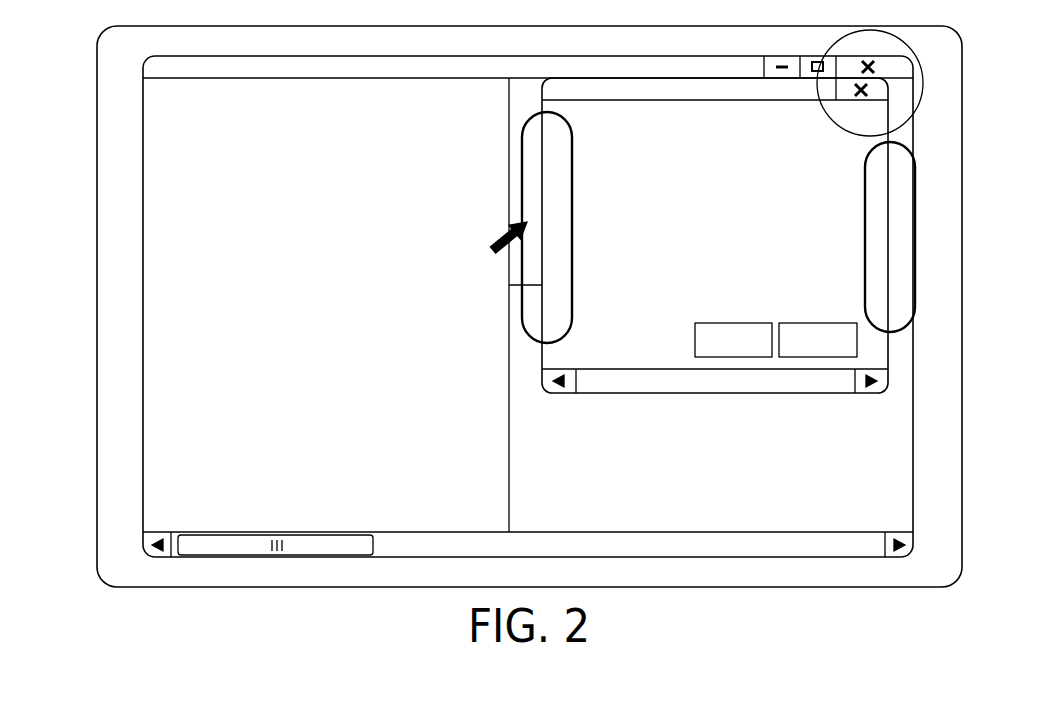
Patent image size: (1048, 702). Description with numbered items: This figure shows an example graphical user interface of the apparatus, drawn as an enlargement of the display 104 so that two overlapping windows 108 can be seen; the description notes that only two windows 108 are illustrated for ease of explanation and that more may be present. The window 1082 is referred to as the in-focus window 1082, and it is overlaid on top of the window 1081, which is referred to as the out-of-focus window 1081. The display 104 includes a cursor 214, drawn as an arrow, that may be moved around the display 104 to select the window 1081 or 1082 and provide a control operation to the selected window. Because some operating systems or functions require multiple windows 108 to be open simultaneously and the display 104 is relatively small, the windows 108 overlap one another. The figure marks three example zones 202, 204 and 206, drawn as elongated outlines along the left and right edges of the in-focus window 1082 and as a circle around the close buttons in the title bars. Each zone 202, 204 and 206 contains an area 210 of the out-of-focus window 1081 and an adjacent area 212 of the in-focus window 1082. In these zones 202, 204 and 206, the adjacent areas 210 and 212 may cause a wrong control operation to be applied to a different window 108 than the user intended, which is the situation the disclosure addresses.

The display 104 is at (952, 40).
The windows 108 is at (527, 306).
The out-of-focus window 1081 is at (143, 241).
The in-focus window 1082 is at (873, 349).
The zone 202 is at (572, 141).
The zone 204 is at (838, 38).
The zone 206 is at (915, 228).
The area of the out-of-focus window 210 is at (892, 68).
The area of the in-focus window 212 is at (876, 90).
The cursor 214 is at (500, 238).